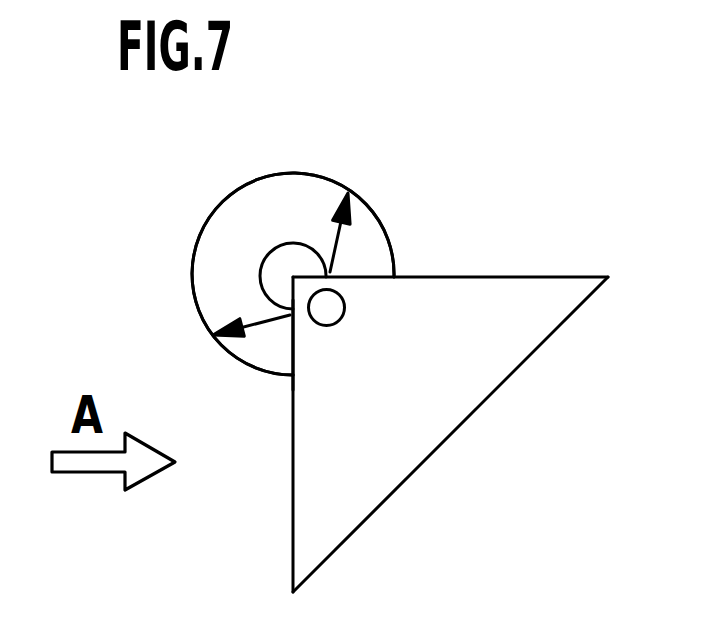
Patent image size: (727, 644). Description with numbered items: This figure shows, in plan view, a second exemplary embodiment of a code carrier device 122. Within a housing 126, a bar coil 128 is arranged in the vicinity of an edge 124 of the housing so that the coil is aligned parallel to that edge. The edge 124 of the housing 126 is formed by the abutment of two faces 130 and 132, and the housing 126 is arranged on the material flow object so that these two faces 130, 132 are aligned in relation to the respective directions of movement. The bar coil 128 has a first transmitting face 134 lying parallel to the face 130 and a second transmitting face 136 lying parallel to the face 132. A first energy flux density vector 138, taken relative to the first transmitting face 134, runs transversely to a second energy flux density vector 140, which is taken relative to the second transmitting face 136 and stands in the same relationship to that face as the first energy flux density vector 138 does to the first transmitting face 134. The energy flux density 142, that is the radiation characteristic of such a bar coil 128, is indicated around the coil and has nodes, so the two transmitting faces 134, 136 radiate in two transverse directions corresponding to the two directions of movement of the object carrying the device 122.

The code carrier device 122 is at (434, 359).
The edge 124 is at (271, 253).
The housing 126 is at (445, 407).
The bar coil 128 is at (340, 316).
The face 130 is at (292, 508).
The face 132 is at (556, 275).
The first transmitting face 134 is at (289, 314).
The second transmitting face 136 is at (303, 272).
The first energy flux density vector 138 is at (278, 318).
The second energy flux density vector 140 is at (337, 255).
The energy flux density 142 is at (213, 217).